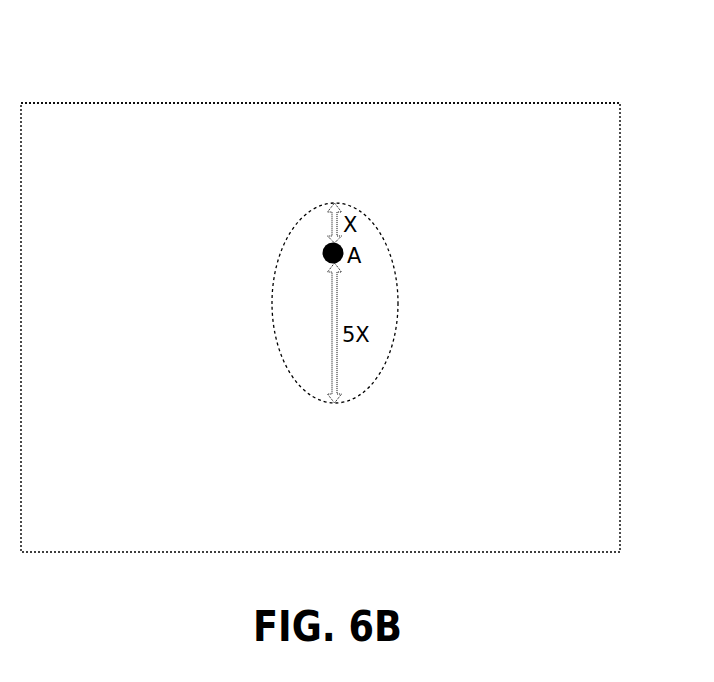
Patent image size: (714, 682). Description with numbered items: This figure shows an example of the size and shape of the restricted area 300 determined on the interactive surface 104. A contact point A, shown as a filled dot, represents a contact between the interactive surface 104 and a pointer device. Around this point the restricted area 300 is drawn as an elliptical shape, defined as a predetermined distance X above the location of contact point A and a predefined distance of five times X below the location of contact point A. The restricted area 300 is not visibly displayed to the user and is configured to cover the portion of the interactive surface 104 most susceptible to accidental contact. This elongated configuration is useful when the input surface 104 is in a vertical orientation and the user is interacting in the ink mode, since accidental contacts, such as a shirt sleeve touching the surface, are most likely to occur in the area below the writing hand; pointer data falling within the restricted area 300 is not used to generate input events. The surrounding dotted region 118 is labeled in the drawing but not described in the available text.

The interactive surface 104 is at (511, 86).
The display area 118 is at (188, 137).
The restricted area 300 is at (268, 323).